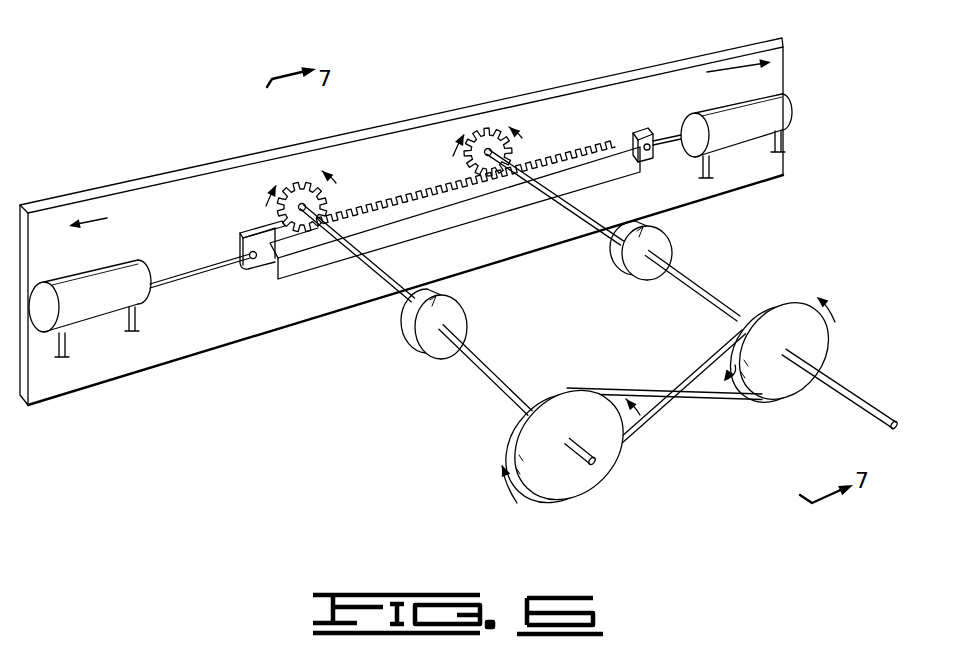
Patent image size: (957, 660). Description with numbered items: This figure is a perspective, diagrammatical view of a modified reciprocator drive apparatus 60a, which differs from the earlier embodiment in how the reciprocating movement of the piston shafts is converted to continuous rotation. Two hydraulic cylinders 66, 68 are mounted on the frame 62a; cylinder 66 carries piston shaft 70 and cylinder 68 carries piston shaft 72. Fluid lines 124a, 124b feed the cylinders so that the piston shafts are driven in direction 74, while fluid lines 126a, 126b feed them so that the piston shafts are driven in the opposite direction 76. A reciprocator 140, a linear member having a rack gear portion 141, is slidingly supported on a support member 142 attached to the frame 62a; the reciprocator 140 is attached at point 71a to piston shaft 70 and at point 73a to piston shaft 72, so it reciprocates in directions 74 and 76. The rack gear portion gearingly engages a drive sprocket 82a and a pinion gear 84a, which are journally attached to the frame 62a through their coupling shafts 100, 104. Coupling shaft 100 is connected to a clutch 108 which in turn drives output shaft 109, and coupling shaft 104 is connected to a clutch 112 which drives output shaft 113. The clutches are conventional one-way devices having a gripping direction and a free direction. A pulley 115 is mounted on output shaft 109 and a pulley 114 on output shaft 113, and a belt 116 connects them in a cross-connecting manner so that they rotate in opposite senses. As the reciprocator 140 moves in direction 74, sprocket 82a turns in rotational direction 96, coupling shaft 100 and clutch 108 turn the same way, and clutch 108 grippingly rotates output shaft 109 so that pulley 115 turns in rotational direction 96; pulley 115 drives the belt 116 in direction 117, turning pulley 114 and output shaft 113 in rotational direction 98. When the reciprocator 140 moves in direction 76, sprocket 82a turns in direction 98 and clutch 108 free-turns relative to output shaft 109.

The reciprocator drive apparatus 60a is at (430, 84).
The frame 62a is at (664, 83).
The hydraulic cylinder 66 is at (725, 112).
The hydraulic cylinder 68 is at (100, 278).
The piston shaft 70 is at (668, 137).
The attachment point 71a is at (645, 143).
The piston shaft 72 is at (195, 268).
The attachment point 73a is at (249, 265).
The direction 74 is at (103, 213).
The direction 76 is at (732, 52).
The drive sprocket 82a is at (310, 180).
The pinion gear 84a is at (498, 128).
The rotational direction 96 is at (263, 200).
The rotational direction 98 is at (336, 182).
The coupling shaft 100 is at (385, 273).
The coupling shaft 104 is at (572, 218).
The clutch 108 is at (449, 312).
The output shaft 109 is at (478, 357).
The clutch 112 is at (657, 243).
The output shaft 113 is at (698, 290).
The pulley 114 is at (796, 344).
The pulley 115 is at (580, 436).
The belt 116 is at (642, 452).
The belt direction 117 is at (722, 408).
The fluid line 124a is at (137, 327).
The fluid line 124b is at (777, 153).
The fluid line 126a is at (67, 362).
The fluid line 126b is at (704, 172).
The reciprocator 140 is at (378, 212).
The rack gear portion 141 is at (576, 150).
The support member 142 is at (333, 266).